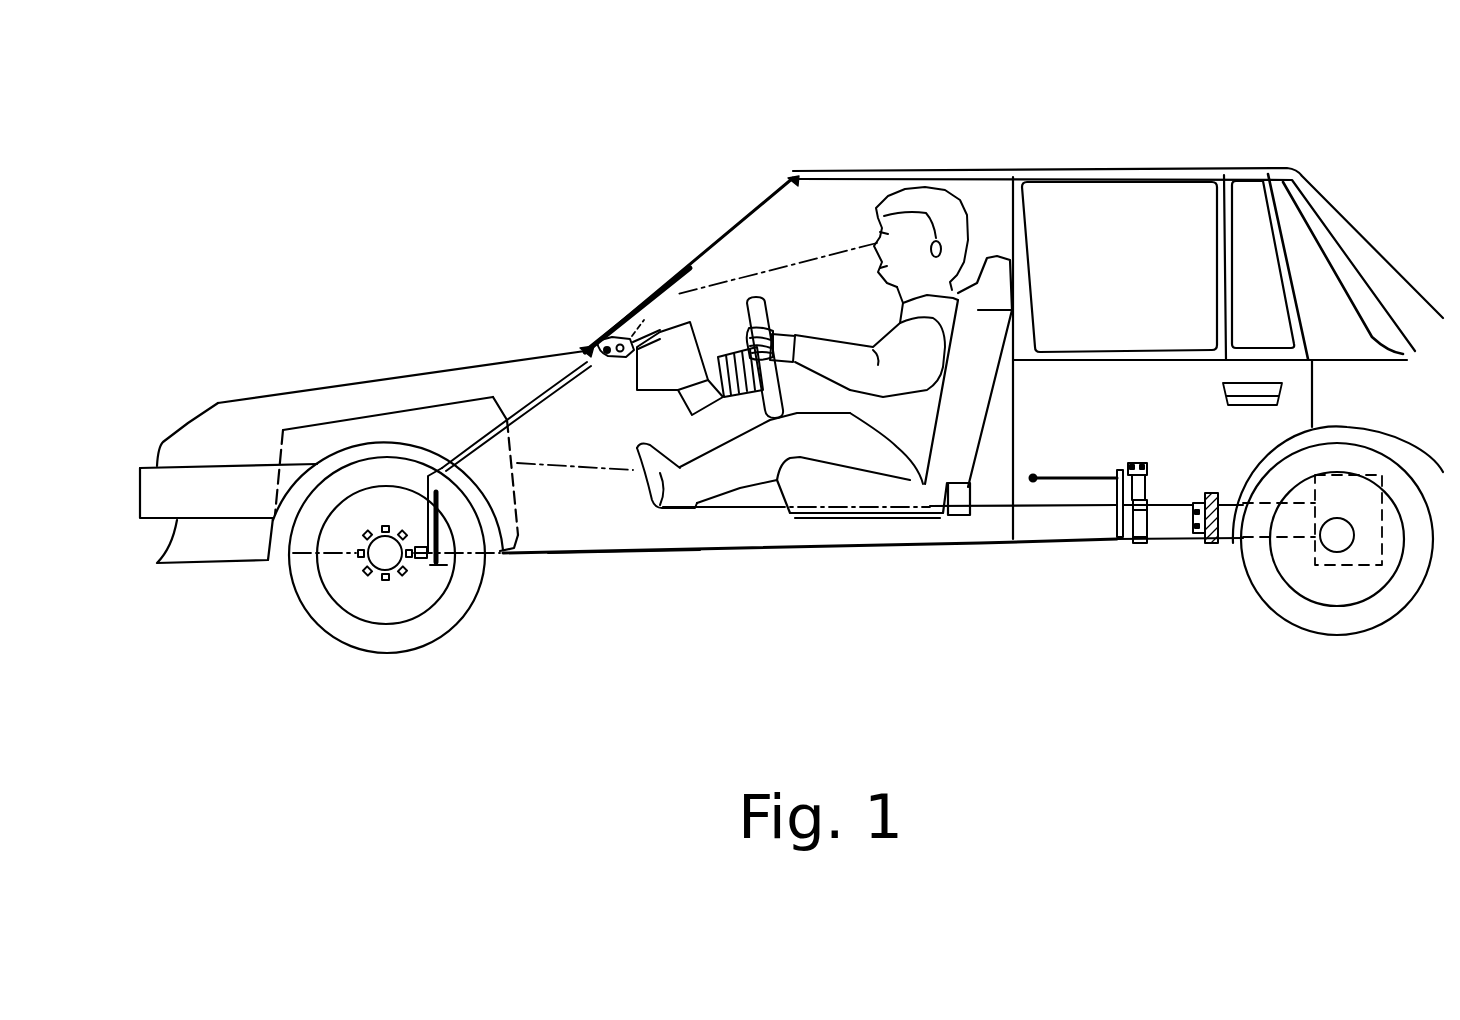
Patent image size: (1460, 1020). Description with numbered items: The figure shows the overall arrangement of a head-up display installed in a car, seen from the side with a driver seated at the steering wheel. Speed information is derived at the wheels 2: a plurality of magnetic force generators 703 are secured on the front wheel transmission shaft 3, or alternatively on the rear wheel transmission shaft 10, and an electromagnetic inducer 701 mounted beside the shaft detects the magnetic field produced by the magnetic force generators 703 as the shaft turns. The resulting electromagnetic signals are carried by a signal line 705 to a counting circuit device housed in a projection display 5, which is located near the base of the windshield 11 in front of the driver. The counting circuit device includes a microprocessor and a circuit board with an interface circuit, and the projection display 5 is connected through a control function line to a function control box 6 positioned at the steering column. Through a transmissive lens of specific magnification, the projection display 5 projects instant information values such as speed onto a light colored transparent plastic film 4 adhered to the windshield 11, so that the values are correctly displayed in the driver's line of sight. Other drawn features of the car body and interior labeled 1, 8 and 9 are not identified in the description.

The vehicle body 1 is at (372, 423).
The wheels 2 is at (307, 593).
The front wheel transmission shaft 3 is at (377, 570).
The light colored transparent plastic film 4 is at (647, 297).
The projection display 5 is at (610, 343).
The function control box 6 is at (688, 322).
The floor sill 8 is at (615, 533).
The dashboard 9 is at (645, 377).
The rear wheel transmission shaft 10 is at (1022, 525).
The windshield 11 is at (770, 202).
The electromagnetic inducer 701 is at (430, 570).
The magnetic force generators 703 is at (400, 575).
The signal line 705 is at (480, 443).